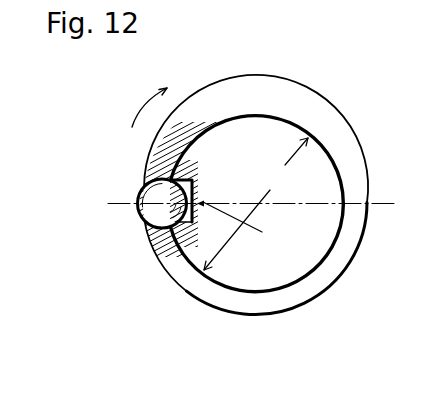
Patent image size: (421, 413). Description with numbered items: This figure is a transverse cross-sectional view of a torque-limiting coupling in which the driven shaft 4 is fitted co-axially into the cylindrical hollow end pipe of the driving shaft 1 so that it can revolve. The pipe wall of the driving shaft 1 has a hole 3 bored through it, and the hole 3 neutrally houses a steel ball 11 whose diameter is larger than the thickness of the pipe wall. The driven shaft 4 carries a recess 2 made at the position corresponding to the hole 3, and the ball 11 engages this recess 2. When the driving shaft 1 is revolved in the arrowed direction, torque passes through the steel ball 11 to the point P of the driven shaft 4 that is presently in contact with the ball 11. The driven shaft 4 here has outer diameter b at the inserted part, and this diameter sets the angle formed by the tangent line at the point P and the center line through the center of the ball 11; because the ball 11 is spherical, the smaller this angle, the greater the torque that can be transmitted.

The driving shaft 1 is at (198, 288).
The recess 2 is at (177, 249).
The hole 3 is at (161, 177).
The driven shaft 4 is at (250, 277).
The steel ball 11 is at (145, 210).
The point of contact P is at (203, 202).
The outer diameter b is at (256, 204).